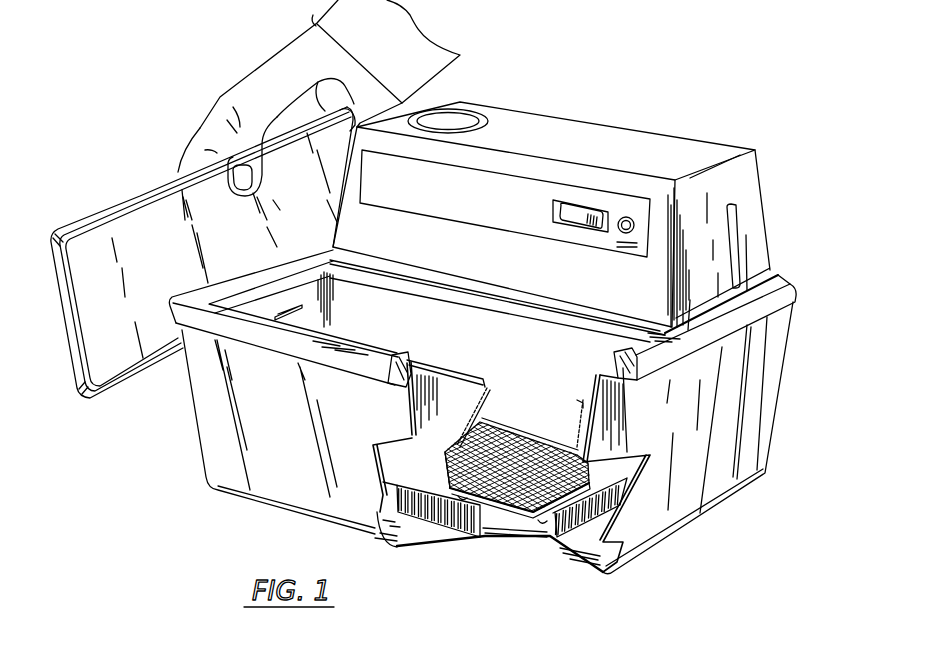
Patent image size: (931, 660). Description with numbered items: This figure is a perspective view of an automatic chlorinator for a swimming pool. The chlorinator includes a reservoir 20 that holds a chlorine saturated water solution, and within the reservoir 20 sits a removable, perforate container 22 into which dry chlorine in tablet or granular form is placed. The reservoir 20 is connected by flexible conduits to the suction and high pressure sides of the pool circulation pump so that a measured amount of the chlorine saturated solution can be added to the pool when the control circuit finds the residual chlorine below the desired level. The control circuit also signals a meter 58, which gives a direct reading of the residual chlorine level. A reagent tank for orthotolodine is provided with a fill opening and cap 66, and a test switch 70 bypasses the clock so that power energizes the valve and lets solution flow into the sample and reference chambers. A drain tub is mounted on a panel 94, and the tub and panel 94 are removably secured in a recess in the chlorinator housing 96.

The reservoir 20 is at (572, 552).
The removable perforate container 22 is at (478, 399).
The meter 58 is at (573, 218).
The fill opening and cap 66 is at (462, 126).
The test switch 70 is at (628, 240).
The panel 94 is at (717, 487).
The chlorinator housing 96 is at (770, 386).